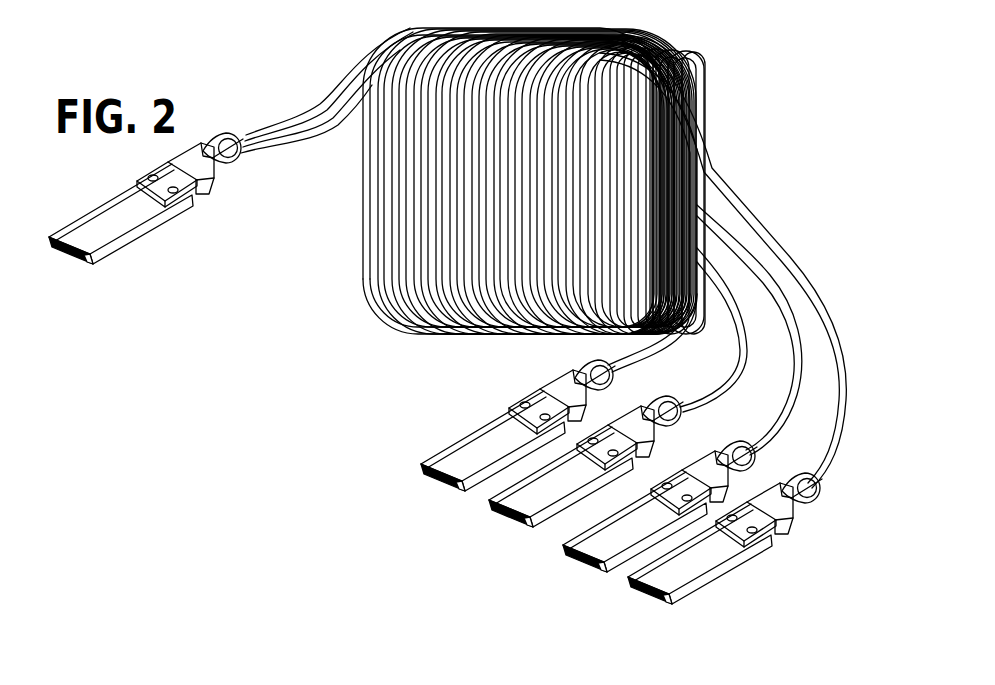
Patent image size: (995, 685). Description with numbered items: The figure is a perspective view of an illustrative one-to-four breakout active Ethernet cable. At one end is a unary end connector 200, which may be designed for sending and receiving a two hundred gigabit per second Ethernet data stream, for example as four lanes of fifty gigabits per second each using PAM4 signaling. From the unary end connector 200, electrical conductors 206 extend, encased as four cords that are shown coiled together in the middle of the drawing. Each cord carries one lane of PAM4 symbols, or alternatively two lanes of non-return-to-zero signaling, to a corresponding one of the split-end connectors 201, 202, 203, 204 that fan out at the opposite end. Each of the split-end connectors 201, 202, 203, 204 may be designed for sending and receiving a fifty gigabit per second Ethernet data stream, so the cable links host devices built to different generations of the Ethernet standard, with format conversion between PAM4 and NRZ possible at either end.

The unary end connector 200 is at (126, 246).
The split-end connector 201 is at (420, 485).
The split-end connector 202 is at (503, 530).
The split-end connector 203 is at (578, 563).
The split-end connector 204 is at (643, 603).
The electrical conductors 206 is at (383, 393).